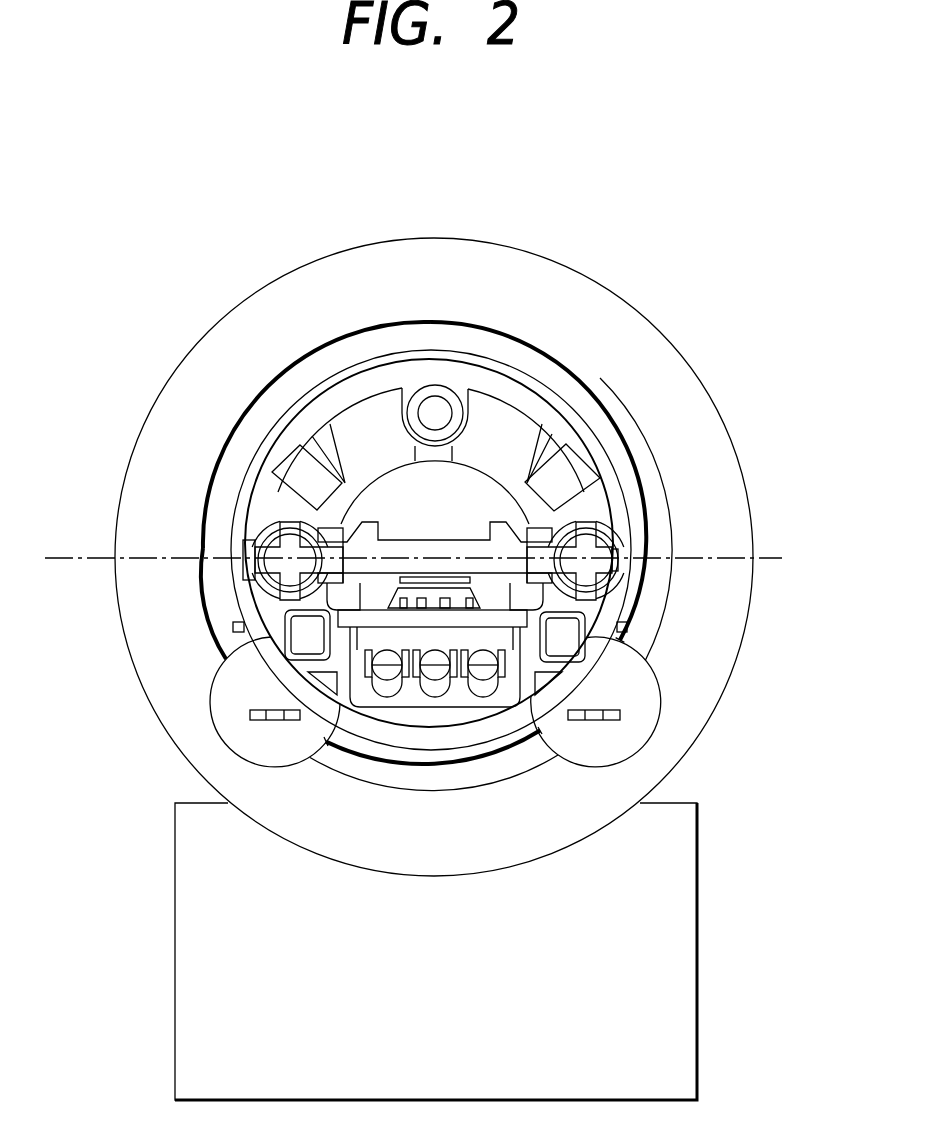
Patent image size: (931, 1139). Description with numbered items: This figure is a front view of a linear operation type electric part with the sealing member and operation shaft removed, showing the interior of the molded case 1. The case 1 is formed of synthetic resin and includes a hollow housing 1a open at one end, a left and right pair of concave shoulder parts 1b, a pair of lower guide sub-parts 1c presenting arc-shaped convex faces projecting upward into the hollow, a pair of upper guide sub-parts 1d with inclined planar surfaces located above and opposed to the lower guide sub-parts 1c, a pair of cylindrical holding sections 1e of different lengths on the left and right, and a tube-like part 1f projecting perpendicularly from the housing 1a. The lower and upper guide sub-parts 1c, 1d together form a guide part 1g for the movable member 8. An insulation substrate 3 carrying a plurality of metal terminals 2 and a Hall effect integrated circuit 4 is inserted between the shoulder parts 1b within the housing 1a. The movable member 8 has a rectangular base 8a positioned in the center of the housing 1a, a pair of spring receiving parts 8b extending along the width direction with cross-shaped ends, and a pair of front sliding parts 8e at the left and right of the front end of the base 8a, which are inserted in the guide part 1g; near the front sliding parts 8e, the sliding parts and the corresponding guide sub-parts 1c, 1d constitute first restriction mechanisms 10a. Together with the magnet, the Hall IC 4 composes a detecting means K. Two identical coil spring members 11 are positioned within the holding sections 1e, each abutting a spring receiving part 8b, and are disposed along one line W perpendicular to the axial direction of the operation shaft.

The molded case 1 is at (626, 297).
The hollow housing 1a is at (470, 483).
The concave shoulder parts 1b is at (352, 628).
The lower guide sub-parts 1c is at (302, 632).
The upper guide sub-parts 1d is at (352, 518).
The cylindrical holding sections 1e is at (592, 478).
The tube-like part 1f is at (686, 908).
The guide part 1g is at (331, 527).
The metal terminals 2 is at (378, 632).
The insulation substrate 3 is at (412, 695).
The Hall effect integrated circuit 4 is at (488, 587).
The movable member 8 is at (458, 533).
The rectangular base 8a is at (422, 543).
The spring receiving parts 8b is at (282, 598).
The front sliding parts 8e is at (366, 502).
The first restriction mechanisms 10a is at (243, 537).
The coil spring members 11 is at (598, 545).
The detecting means K is at (653, 675).
The line W is at (781, 558).